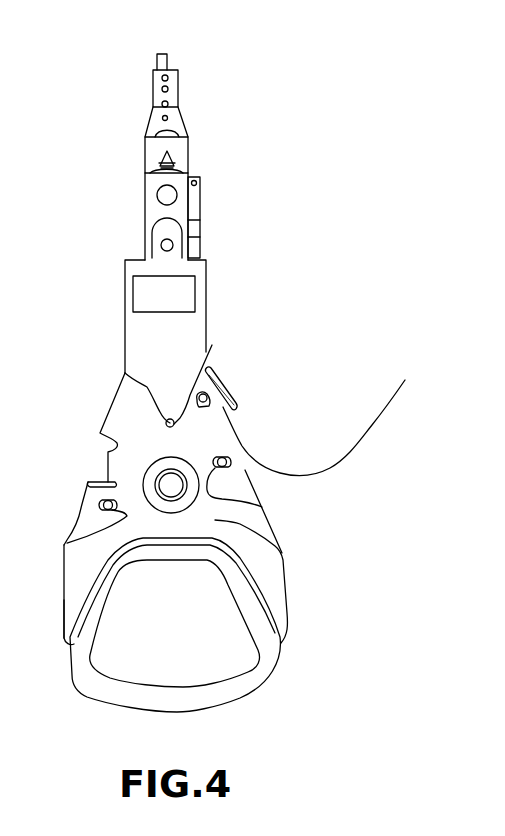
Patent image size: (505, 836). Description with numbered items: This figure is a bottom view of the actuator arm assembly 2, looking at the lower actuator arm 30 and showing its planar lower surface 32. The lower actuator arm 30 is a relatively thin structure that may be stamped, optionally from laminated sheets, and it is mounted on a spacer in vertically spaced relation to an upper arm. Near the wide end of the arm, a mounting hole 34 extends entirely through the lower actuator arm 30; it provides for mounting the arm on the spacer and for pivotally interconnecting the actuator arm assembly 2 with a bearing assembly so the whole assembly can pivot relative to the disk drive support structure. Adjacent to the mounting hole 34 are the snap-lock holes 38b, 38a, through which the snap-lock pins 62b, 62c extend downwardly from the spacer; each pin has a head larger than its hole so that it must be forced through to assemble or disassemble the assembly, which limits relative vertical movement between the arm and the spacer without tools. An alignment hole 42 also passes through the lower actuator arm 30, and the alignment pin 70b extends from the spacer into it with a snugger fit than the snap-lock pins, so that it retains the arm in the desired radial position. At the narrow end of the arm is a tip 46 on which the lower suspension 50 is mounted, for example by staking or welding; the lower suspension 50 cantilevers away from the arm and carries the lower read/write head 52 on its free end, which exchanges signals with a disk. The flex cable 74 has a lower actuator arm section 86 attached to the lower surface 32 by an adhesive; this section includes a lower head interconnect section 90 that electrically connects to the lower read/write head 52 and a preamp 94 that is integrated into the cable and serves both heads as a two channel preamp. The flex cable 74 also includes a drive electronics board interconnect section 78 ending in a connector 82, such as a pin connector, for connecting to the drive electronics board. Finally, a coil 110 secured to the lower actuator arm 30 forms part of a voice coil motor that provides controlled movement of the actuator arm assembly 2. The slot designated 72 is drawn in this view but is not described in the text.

The actuator arm assembly 2 is at (374, 102).
The lower read/write head 52 is at (171, 70).
The lower suspension 50 is at (190, 146).
The tip 46 is at (151, 208).
The lower head interconnect section 90 is at (200, 202).
The preamp 94 is at (188, 287).
The lower actuator arm section 86 is at (150, 340).
The alignment hole 42 is at (131, 374).
The alignment pin 70b is at (212, 345).
The slot 72 is at (227, 391).
The mounting hole 34 is at (165, 462).
The snap-lock pin 62b is at (102, 506).
The snap-lock hole 38b is at (65, 543).
The lower surface 32 is at (68, 583).
The drive electronics board interconnect section 78 is at (290, 473).
The connector 82 is at (405, 380).
The flex cable 74 is at (384, 418).
The snap-lock pin 62c is at (228, 460).
The snap-lock hole 38a is at (262, 507).
The lower actuator arm 30 is at (268, 578).
The coil 110 is at (254, 678).